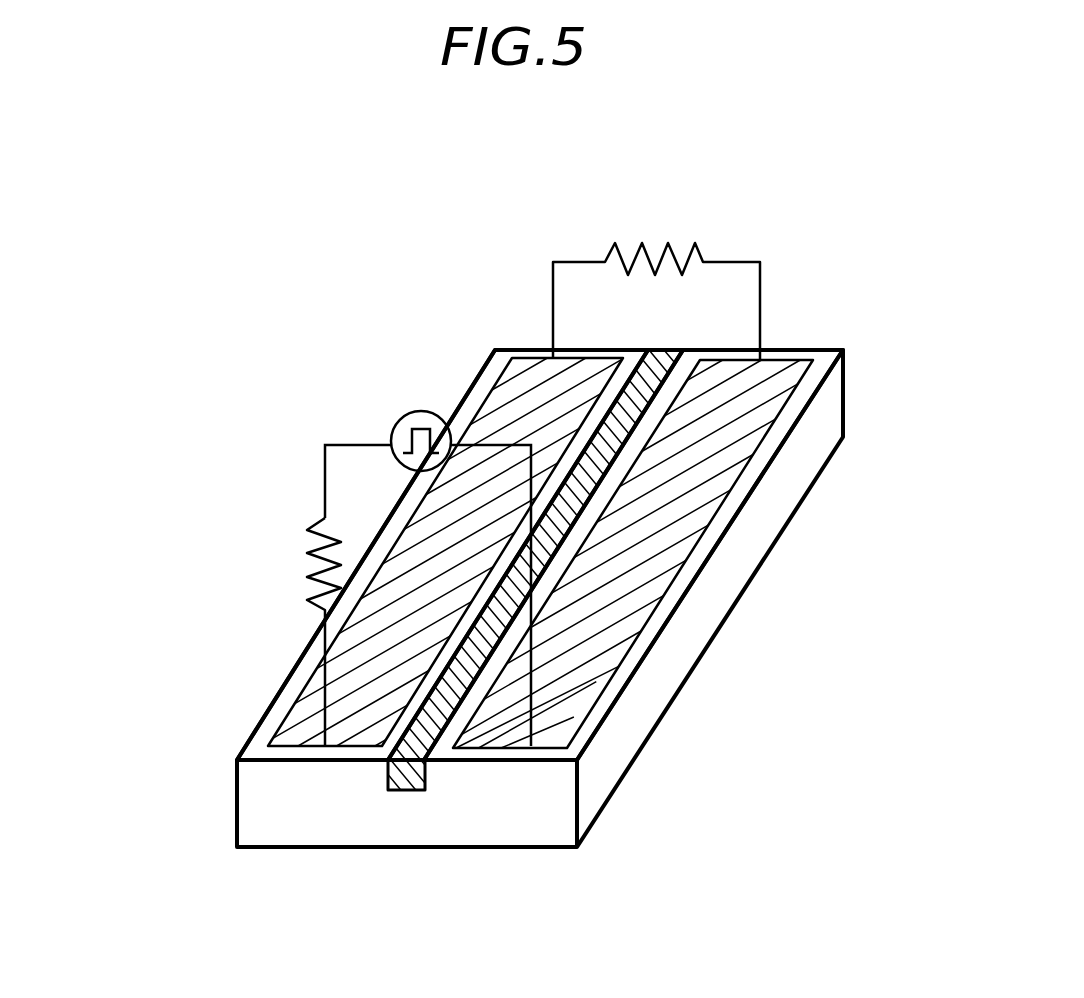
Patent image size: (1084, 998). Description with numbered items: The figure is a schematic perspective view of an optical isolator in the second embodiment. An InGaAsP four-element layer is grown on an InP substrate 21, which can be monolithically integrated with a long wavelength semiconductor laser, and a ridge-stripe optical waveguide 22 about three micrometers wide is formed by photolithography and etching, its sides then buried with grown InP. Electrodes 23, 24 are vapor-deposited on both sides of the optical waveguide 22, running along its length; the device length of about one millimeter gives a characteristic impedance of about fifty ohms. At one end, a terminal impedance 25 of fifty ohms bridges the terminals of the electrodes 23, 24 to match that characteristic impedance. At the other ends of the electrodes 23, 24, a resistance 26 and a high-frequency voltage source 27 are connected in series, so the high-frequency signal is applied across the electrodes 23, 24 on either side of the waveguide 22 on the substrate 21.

The substrate 21 is at (590, 787).
The ridge-stripe optical waveguide 22 is at (407, 792).
The electrode 23 is at (720, 503).
The electrode 24 is at (483, 380).
The terminal impedance 25 is at (649, 247).
The resistance 26 is at (310, 560).
The high-frequency voltage source 27 is at (395, 430).